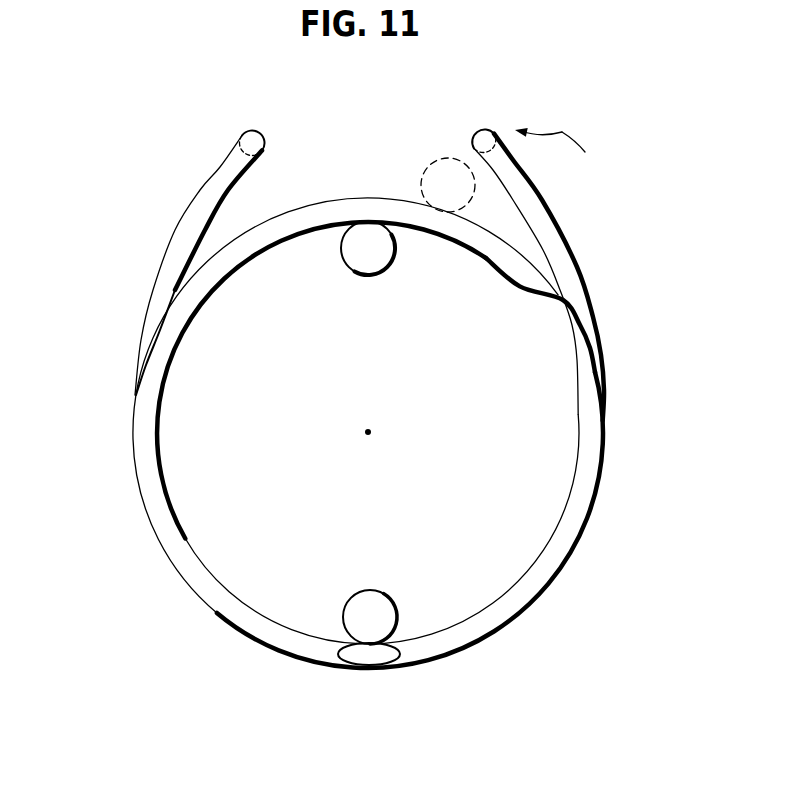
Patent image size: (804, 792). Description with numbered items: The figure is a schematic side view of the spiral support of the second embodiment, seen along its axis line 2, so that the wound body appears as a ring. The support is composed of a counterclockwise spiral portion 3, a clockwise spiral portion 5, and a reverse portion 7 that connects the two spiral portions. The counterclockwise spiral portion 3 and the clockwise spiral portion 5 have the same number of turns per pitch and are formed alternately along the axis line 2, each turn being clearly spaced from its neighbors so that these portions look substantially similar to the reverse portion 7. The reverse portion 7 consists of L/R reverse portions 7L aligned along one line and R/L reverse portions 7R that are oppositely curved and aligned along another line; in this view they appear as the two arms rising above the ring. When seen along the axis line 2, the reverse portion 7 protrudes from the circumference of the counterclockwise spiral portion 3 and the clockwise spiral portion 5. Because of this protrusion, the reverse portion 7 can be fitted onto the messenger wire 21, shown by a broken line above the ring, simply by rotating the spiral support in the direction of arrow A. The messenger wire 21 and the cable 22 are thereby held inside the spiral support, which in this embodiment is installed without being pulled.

The axis line 2 is at (372, 436).
The counterclockwise spiral portion 3 is at (596, 463).
The clockwise spiral portion 5 is at (138, 452).
The reverse portion 7 is at (218, 136).
The R/L reverse portion 7R is at (177, 228).
The L/R reverse portion 7L is at (552, 230).
The messenger wire 21 is at (448, 159).
The cable 22 is at (344, 614).
The arrow A is at (562, 132).